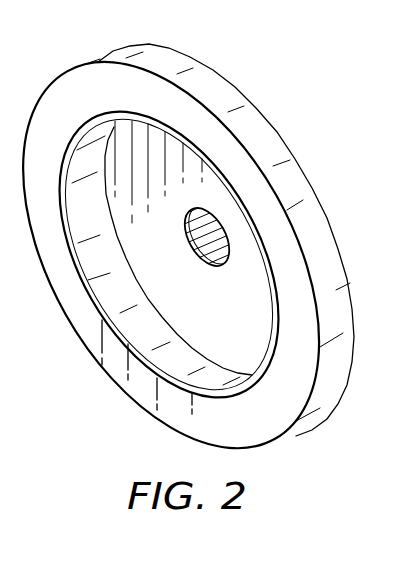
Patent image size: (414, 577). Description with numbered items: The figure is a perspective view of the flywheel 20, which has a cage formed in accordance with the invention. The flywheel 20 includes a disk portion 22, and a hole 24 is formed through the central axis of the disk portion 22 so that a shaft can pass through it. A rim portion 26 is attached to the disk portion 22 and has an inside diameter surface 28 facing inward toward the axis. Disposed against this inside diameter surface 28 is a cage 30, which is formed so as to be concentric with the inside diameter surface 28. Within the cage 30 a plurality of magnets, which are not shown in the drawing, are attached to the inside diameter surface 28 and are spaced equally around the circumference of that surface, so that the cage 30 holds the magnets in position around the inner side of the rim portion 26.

The flywheel 20 is at (202, 255).
The disk portion 22 is at (233, 330).
The hole 24 is at (190, 245).
The rim portion 26 is at (270, 153).
The inside diameter surface 28 is at (273, 274).
The cage 30 is at (110, 274).